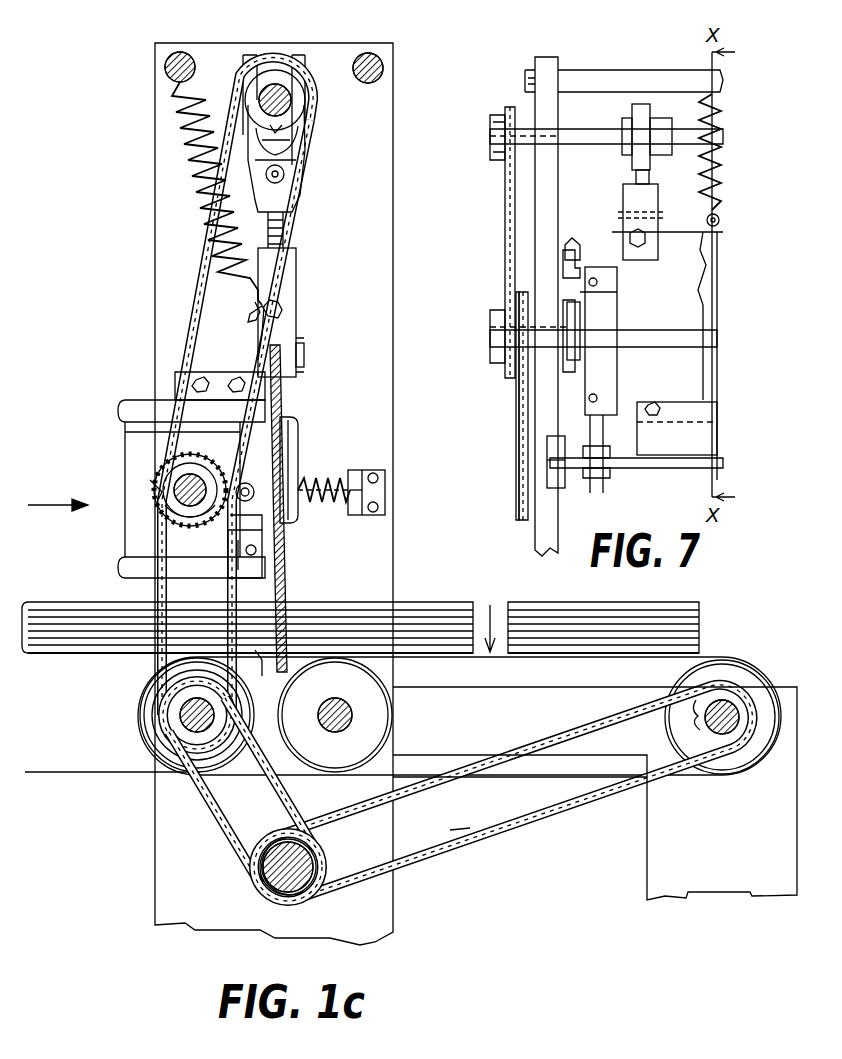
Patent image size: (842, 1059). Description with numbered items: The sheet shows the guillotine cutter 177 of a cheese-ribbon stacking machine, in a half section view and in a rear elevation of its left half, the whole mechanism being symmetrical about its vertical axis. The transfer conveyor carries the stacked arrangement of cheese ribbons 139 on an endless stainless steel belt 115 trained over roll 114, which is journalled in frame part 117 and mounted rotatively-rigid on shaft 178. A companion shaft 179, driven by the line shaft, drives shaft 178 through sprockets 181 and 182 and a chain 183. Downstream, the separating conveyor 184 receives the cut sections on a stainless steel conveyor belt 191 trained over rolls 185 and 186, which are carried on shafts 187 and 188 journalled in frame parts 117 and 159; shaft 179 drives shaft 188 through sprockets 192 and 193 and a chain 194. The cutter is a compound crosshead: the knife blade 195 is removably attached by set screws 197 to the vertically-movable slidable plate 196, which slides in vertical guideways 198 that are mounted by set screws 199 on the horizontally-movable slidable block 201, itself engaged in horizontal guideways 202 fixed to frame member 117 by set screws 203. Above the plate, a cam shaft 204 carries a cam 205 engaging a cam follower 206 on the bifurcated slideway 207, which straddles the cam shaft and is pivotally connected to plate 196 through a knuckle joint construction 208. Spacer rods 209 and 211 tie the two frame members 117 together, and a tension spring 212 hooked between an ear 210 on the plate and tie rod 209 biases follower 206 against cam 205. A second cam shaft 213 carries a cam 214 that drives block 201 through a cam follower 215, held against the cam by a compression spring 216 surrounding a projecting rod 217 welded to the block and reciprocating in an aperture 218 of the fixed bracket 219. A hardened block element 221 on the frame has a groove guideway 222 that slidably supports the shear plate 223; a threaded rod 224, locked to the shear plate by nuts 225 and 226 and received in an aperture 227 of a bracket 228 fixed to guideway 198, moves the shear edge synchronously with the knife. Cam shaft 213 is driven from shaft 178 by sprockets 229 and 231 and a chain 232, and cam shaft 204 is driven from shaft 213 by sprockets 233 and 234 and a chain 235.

In FIG. 1c, the roll 114 is at (158, 742).
In FIG. 1c, the endless stainless steel belt 115 is at (43, 768).
In FIG. 1c, the frame part 117 is at (168, 262).
In FIG. 7, the frame part 117 is at (548, 188).
In FIG. 1c, the stacked arrangement of cheese ribbons 139 is at (38, 600).
In FIG. 1c, the frame part 159 is at (660, 858).
In FIG. 1c, the guillotine cutter 177 is at (55, 494).
In FIG. 1c, the shaft 178 is at (180, 716).
In FIG. 1c, the companion shaft 179 is at (258, 882).
In FIG. 1c, the sprocket 181 is at (162, 712).
In FIG. 1c, the sprocket 182 is at (262, 872).
In FIG. 1c, the chain 183 is at (228, 838).
In FIG. 1c, the separating conveyor 184 is at (493, 614).
In FIG. 1c, the roll 185 is at (375, 730).
In FIG. 1c, the roll 186 is at (680, 736).
In FIG. 1c, the shaft 187 is at (352, 708).
In FIG. 1c, the shaft 188 is at (700, 712).
In FIG. 1c, the stainless steel conveyor belt 191 is at (540, 784).
In FIG. 1c, the sprocket 192 is at (276, 830).
In FIG. 1c, the sprocket 193 is at (684, 722).
In FIG. 1c, the chain 194 is at (480, 842).
In FIG. 1c, the knife blade 195 is at (288, 592).
In FIG. 7, the knife blade 195 is at (706, 438).
In FIG. 1c, the slidable plate 196 is at (284, 520).
In FIG. 7, the slidable plate 196 is at (700, 386).
In FIG. 7, the set screws 197 is at (656, 402).
In FIG. 1c, the vertical guideways 198 is at (292, 425).
In FIG. 7, the vertical guideways 198 is at (600, 365).
In FIG. 7, the set screws 199 is at (598, 282).
In FIG. 1c, the slidable block 201 is at (145, 420).
In FIG. 7, the slidable block 201 is at (600, 296).
In FIG. 1c, the horizontal guideways 202 is at (142, 405).
In FIG. 7, the horizontal guideways 202 is at (578, 262).
In FIG. 1c, the set screws 203 is at (203, 378).
In FIG. 7, the set screws 203 is at (582, 248).
In FIG. 1c, the cam shaft 204 is at (300, 98).
In FIG. 7, the cam shaft 204 is at (565, 128).
In FIG. 1c, the cam 205 is at (295, 138).
In FIG. 7, the cam 205 is at (660, 122).
In FIG. 1c, the cam follower 206 is at (286, 178).
In FIG. 7, the cam follower 206 is at (652, 170).
In FIG. 1c, the bifurcated slideway 207 is at (300, 160).
In FIG. 7, the bifurcated slideway 207 is at (638, 110).
In FIG. 1c, the knuckle joint construction 208 is at (310, 317).
In FIG. 7, the knuckle joint construction 208 is at (684, 216).
In FIG. 1c, the spacer rod 209 is at (185, 52).
In FIG. 7, the spacer rod 209 is at (625, 68).
In FIG. 1c, the ear 210 is at (252, 304).
In FIG. 7, the ear 210 is at (720, 220).
In FIG. 1c, the spacer rod 211 is at (370, 53).
In FIG. 1c, the tension spring 212 is at (202, 200).
In FIG. 7, the tension spring 212 is at (716, 116).
In FIG. 1c, the second cam shaft 213 is at (160, 504).
In FIG. 7, the second cam shaft 213 is at (655, 334).
In FIG. 1c, the cam 214 is at (158, 480).
In FIG. 7, the cam 214 is at (580, 312).
In FIG. 1c, the cam follower 215 is at (250, 482).
In FIG. 1c, the compression spring 216 is at (326, 476).
In FIG. 1c, the projecting rod 217 is at (333, 500).
In FIG. 1c, the aperture 218 is at (358, 518).
In FIG. 1c, the fixed bracket 219 is at (368, 470).
In FIG. 7, the hardened block element 221 is at (548, 447).
In FIG. 7, the groove guideway 222 is at (548, 467).
In FIG. 1c, the shear plate 223 is at (262, 676).
In FIG. 7, the shear plate 223 is at (688, 462).
In FIG. 7, the threaded rod 224 is at (594, 493).
In FIG. 7, the nut 225 is at (612, 480).
In FIG. 7, the nut 226 is at (612, 452).
In FIG. 1c, the aperture 227 is at (236, 565).
In FIG. 1c, the bracket 228 is at (236, 542).
In FIG. 1c, the sprocket 229 is at (210, 740).
In FIG. 1c, the sprocket 231 is at (168, 520).
In FIG. 7, the sprocket 231 is at (518, 378).
In FIG. 1c, the chain 232 is at (158, 492).
In FIG. 7, the chain 232 is at (520, 426).
In FIG. 1c, the sprocket 233 is at (162, 465).
In FIG. 7, the sprocket 233 is at (500, 370).
In FIG. 1c, the sprocket 234 is at (280, 70).
In FIG. 7, the sprocket 234 is at (496, 118).
In FIG. 1c, the chain 235 is at (210, 228).
In FIG. 7, the chain 235 is at (507, 236).